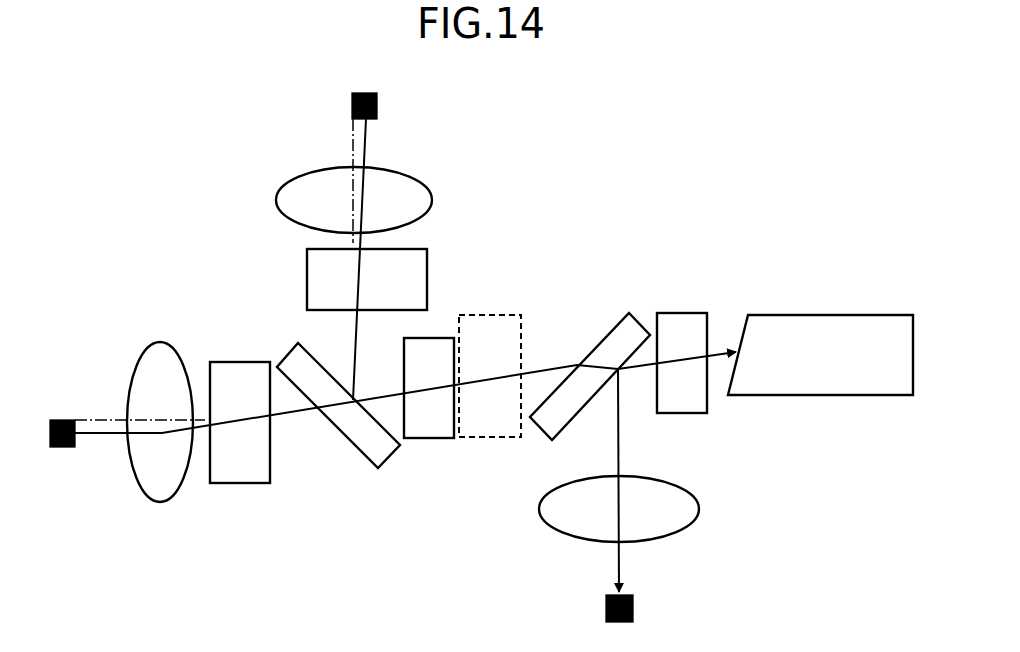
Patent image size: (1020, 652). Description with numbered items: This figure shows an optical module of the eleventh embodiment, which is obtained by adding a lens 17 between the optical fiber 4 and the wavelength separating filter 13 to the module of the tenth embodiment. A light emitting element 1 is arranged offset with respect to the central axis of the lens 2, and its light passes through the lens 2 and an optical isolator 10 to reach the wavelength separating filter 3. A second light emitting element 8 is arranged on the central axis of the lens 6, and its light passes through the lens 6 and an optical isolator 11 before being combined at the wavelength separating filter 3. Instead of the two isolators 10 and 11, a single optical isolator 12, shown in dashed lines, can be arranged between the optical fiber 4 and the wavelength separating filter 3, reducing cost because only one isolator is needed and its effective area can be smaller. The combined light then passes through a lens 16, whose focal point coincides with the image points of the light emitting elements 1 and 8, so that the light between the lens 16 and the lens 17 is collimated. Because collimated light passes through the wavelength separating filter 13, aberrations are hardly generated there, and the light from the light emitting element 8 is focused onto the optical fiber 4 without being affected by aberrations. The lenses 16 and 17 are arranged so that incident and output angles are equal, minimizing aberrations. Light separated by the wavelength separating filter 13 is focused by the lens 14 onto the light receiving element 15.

The light emitting element 1 is at (62, 420).
The lens 2 is at (160, 342).
The optical isolator 10 is at (225, 362).
The wavelength separating filter 3 is at (283, 358).
The light emitting element 8 is at (377, 103).
The lens 6 is at (432, 197).
The optical isolator 11 is at (427, 277).
The lens 16 is at (428, 438).
The optical isolator 12 is at (494, 437).
The wavelength separating filter 13 is at (606, 333).
The lens 17 is at (684, 313).
The optical fiber 4 is at (785, 315).
The lens 14 is at (698, 507).
The light receiving element 15 is at (633, 605).